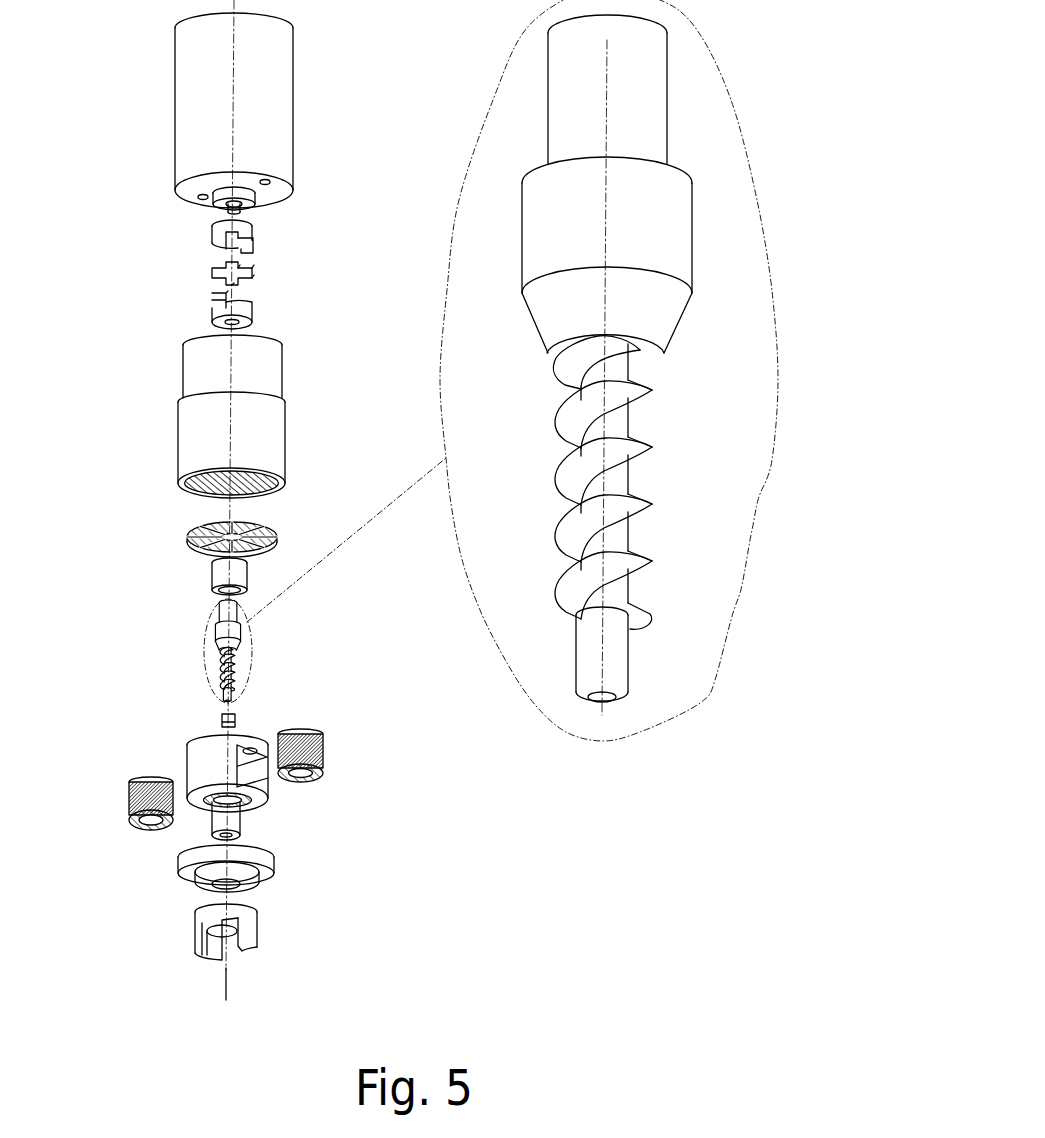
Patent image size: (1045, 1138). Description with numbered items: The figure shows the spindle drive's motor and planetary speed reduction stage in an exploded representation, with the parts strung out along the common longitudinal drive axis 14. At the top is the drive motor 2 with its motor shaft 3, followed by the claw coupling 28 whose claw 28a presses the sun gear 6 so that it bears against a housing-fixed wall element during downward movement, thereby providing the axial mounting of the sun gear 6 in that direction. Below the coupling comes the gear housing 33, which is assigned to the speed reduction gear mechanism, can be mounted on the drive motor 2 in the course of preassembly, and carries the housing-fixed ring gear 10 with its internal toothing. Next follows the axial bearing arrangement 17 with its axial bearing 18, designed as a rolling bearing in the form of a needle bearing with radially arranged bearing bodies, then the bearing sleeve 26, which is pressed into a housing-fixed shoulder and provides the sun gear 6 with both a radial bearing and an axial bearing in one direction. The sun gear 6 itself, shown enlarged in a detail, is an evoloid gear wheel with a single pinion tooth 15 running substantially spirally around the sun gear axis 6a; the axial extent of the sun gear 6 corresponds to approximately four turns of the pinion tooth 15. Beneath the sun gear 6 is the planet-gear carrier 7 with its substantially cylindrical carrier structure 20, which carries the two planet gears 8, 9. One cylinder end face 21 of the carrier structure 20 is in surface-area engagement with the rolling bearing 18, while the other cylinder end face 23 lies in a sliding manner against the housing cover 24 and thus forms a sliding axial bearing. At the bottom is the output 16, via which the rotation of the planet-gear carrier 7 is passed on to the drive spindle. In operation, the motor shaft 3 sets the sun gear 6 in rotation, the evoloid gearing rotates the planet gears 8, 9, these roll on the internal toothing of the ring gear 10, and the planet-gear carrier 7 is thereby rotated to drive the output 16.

The drive motor 2 is at (197, 115).
The motor shaft 3 is at (213, 210).
The claw coupling 28 is at (229, 274).
The claw 28a is at (213, 318).
The gear housing 33 is at (231, 427).
The ring gear 10 is at (262, 482).
The axial bearing arrangement 17 is at (166, 518).
The axial bearing 18 is at (190, 530).
The bearing sleeve 26 is at (213, 577).
The sun gear 6 is at (669, 390).
The pinion tooth 15 is at (632, 478).
The sun gear axis 6a is at (605, 712).
The cylinder end face 21 is at (243, 735).
The carrier structure 20 is at (205, 763).
The cylinder end face 23 is at (265, 808).
The planet gear 8 is at (130, 806).
The planet gear 9 is at (325, 762).
The planet-gear carrier 7 is at (253, 753).
The housing cover 24 is at (268, 878).
The output 16 is at (197, 940).
The longitudinal drive axis 14 is at (398, 996).